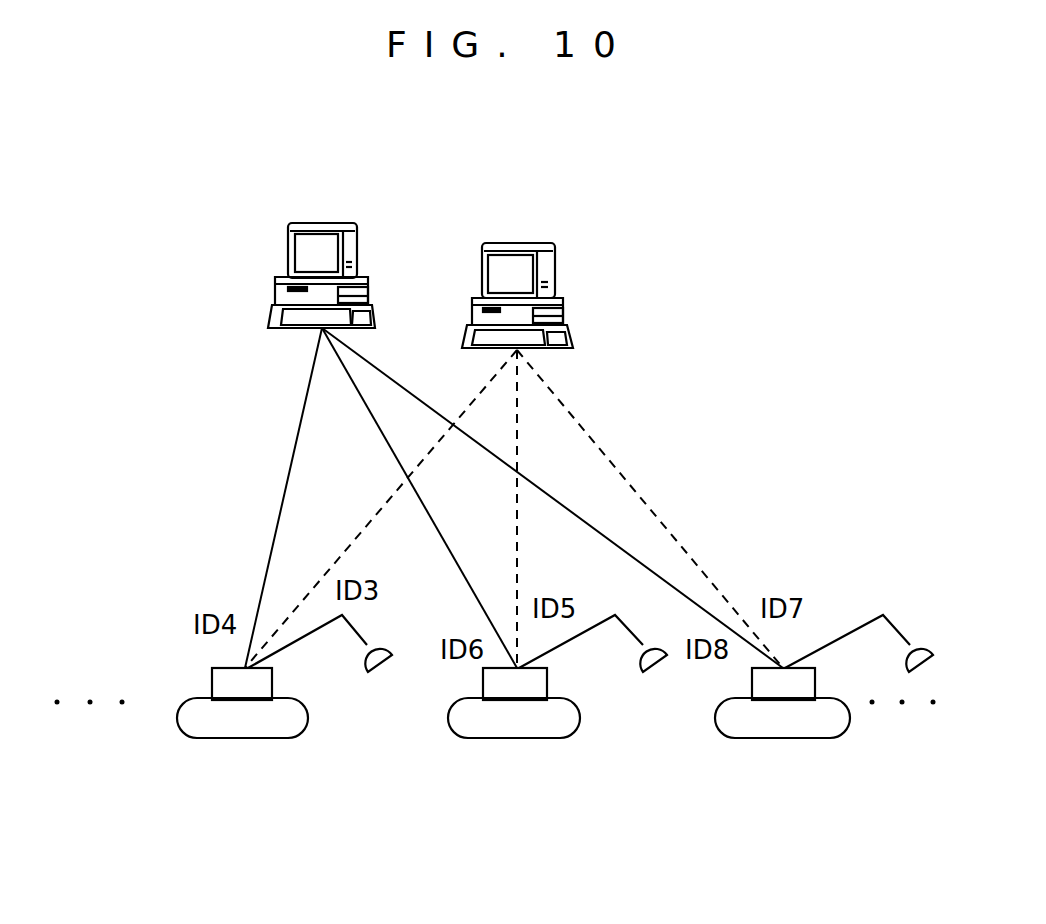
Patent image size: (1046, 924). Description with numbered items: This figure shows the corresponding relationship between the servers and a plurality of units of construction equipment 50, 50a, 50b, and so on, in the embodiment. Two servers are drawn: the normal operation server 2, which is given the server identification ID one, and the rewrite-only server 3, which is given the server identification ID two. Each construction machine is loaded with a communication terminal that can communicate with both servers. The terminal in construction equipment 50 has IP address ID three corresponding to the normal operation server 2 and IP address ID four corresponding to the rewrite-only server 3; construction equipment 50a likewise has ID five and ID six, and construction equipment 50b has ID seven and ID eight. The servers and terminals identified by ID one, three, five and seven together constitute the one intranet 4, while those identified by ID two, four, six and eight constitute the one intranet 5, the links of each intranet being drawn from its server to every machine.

The normal operation server 2 is at (557, 275).
The rewrite-only server 3 is at (288, 252).
The intranet 4 is at (619, 459).
The intranet 5 is at (258, 479).
The construction equipment 50 is at (212, 685).
The construction equipment 50a is at (483, 685).
The construction equipment 50b is at (752, 685).